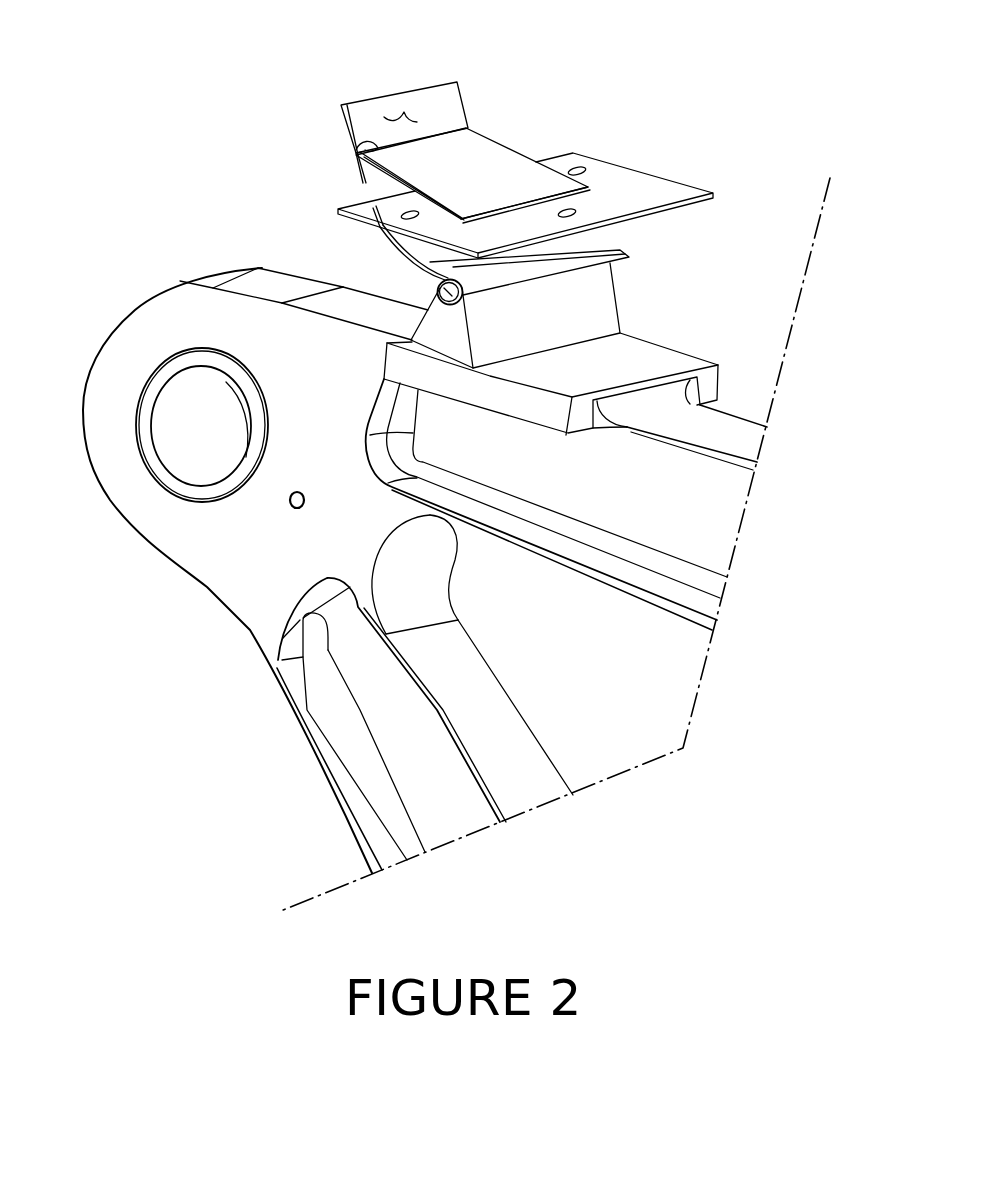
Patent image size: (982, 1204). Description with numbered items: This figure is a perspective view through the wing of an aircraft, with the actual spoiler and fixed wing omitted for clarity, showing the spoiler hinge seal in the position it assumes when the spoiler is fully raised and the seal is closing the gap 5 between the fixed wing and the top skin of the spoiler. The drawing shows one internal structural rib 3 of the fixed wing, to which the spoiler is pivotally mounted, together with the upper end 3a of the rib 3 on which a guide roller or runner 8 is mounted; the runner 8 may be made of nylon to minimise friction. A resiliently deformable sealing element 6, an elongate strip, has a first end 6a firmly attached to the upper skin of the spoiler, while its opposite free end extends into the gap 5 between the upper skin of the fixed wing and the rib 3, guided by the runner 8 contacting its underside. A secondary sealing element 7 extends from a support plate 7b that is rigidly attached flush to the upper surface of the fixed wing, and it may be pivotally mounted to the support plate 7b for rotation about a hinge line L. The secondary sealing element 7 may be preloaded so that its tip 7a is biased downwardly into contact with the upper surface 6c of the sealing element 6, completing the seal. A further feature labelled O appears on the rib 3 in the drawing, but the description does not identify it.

The internal structural rib 3 is at (226, 583).
The upper end of the rib 3a is at (343, 307).
The gap 5 is at (320, 242).
The sealing element 6 is at (466, 98).
The first end of the sealing element 6a is at (358, 112).
The upper surface of the sealing element 6c is at (405, 112).
The secondary sealing element 7 is at (497, 155).
The tip of the secondary sealing element 7a is at (358, 146).
The support plate 7b is at (673, 200).
The guide roller or runner 8 is at (440, 286).
The hinge line L is at (563, 196).
The opening O is at (297, 501).